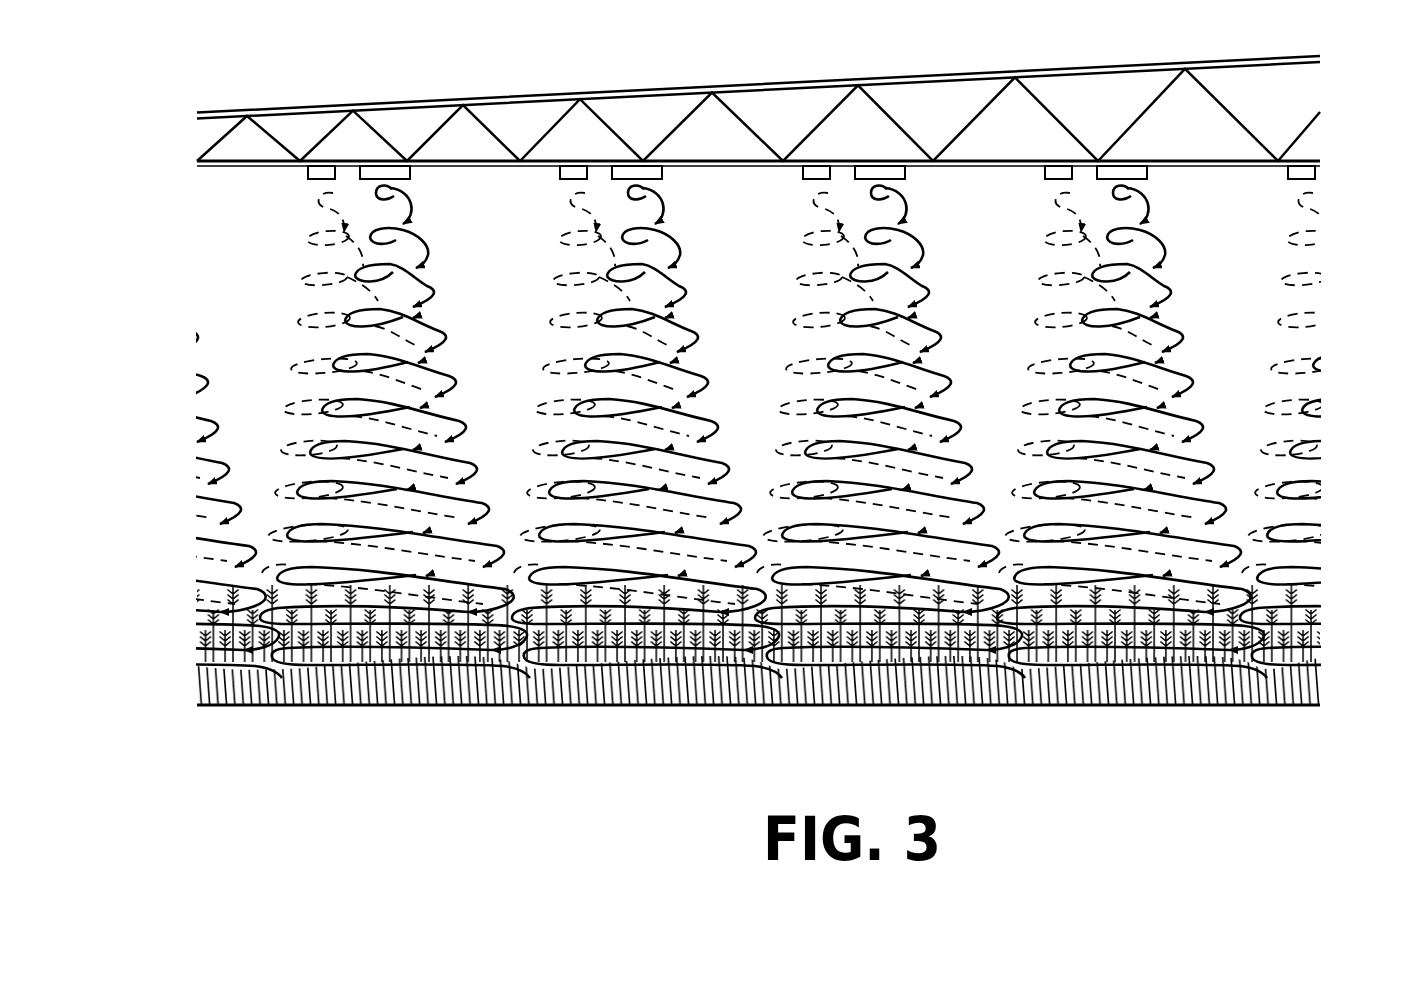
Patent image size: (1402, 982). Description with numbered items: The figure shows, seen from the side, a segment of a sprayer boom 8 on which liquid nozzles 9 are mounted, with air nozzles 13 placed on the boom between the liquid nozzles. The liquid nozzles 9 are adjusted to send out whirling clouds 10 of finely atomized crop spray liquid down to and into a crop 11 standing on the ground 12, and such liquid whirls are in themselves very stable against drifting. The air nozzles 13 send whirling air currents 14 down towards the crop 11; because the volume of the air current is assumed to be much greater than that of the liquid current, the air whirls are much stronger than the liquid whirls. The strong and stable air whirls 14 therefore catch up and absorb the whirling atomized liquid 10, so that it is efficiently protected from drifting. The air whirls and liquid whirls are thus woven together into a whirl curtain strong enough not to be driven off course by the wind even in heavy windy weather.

The sprayer boom 8 is at (681, 84).
The liquid nozzles 9 is at (307, 179).
The air nozzles 13 is at (401, 180).
The whirling clouds 10 is at (298, 322).
The whirling air currents 14 is at (209, 381).
The crop 11 is at (1315, 683).
The ground 12 is at (810, 706).